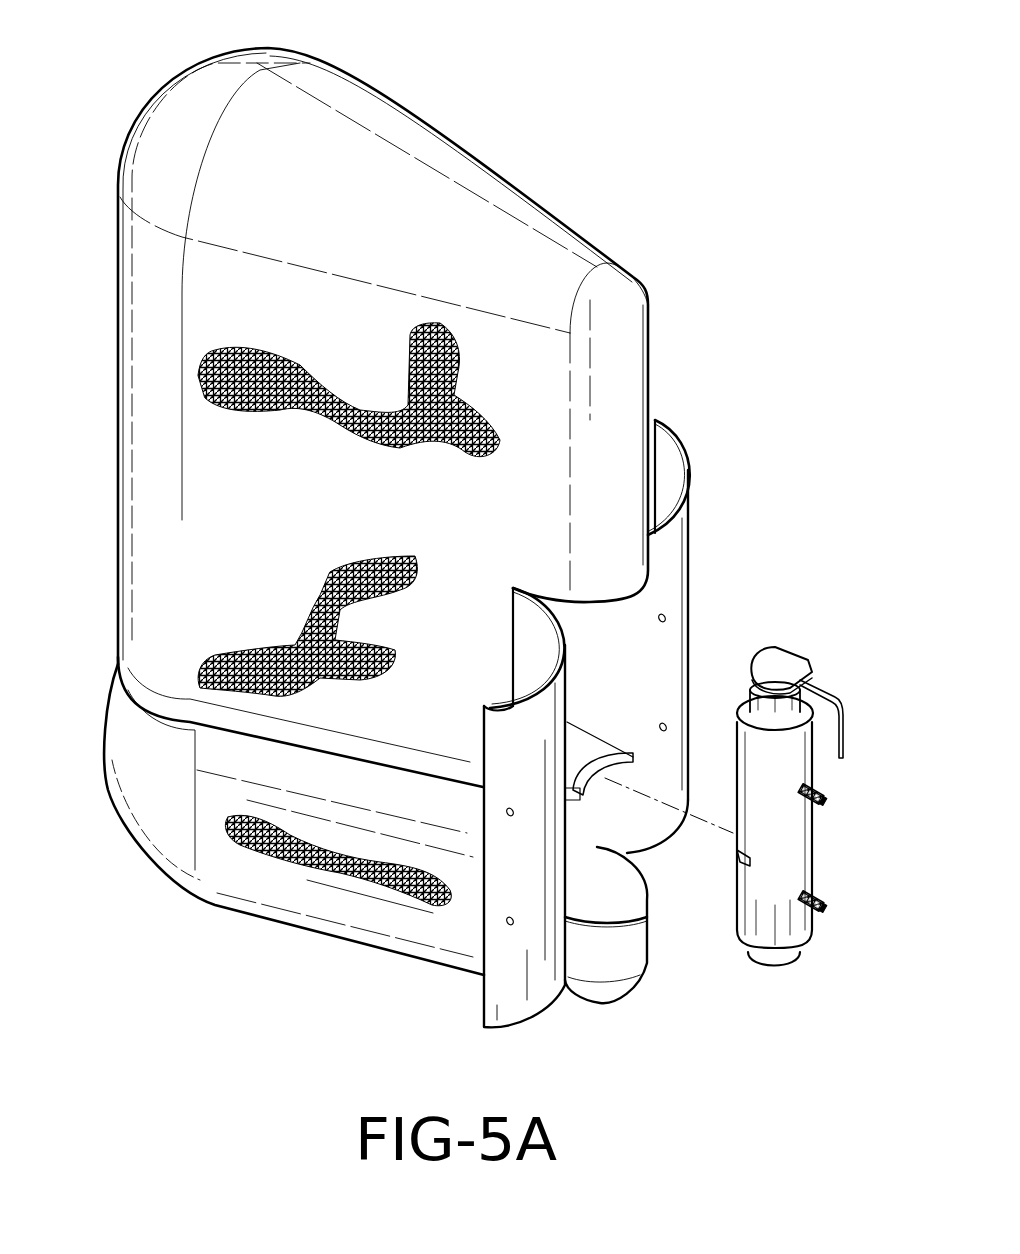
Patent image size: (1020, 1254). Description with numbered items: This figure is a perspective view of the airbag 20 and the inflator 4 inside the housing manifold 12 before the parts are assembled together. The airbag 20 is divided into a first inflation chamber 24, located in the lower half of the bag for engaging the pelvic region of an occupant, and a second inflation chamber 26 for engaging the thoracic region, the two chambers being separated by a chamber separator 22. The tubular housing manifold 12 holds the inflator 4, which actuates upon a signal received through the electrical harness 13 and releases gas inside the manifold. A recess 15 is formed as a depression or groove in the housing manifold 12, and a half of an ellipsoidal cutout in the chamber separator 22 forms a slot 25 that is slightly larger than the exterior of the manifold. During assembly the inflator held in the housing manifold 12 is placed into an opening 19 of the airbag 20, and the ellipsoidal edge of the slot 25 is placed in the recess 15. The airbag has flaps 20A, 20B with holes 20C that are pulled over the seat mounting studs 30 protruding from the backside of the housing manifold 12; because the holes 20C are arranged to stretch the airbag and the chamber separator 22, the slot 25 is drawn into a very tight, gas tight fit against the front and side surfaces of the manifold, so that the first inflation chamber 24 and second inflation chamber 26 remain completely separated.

The airbag 20 is at (578, 130).
The second inflation chamber 26 is at (205, 326).
The first inflation chamber 24 is at (150, 845).
The flap 20A is at (498, 1005).
The flap 20B is at (682, 446).
The holes 20C is at (505, 812).
The opening 19 is at (618, 626).
The chamber separator 22 is at (598, 735).
The slot 25 is at (606, 758).
The housing manifold 12 is at (752, 902).
The inflator 4 is at (780, 662).
The electrical harness 13 is at (846, 716).
The seat mounting studs 30 is at (824, 800).
The recess 15 is at (738, 860).